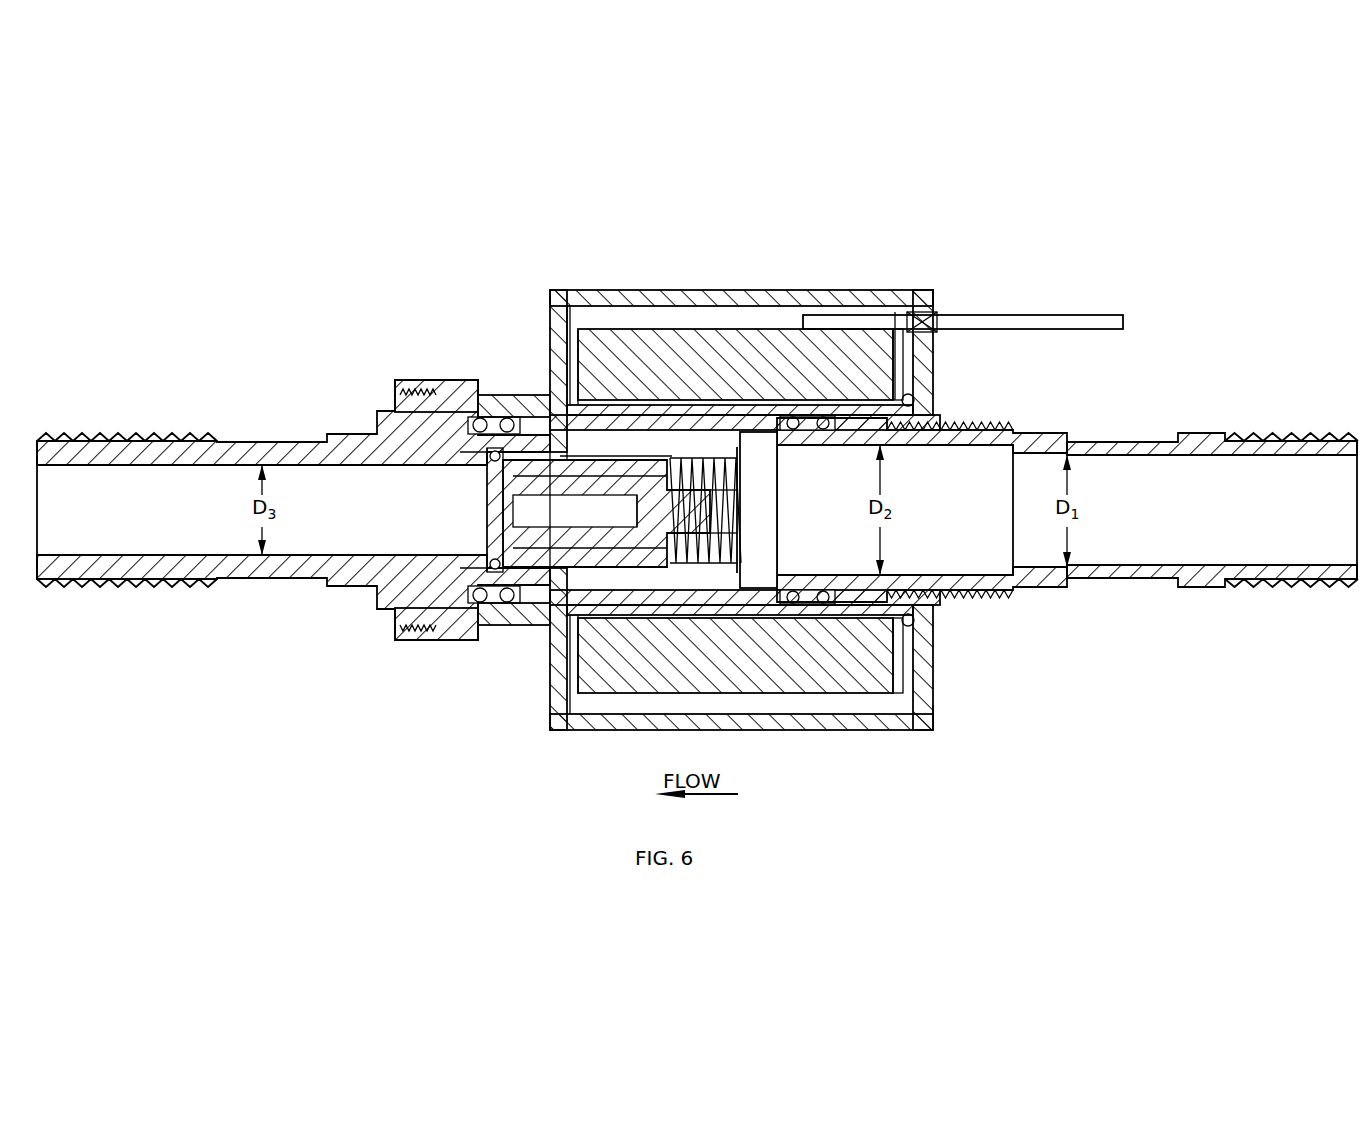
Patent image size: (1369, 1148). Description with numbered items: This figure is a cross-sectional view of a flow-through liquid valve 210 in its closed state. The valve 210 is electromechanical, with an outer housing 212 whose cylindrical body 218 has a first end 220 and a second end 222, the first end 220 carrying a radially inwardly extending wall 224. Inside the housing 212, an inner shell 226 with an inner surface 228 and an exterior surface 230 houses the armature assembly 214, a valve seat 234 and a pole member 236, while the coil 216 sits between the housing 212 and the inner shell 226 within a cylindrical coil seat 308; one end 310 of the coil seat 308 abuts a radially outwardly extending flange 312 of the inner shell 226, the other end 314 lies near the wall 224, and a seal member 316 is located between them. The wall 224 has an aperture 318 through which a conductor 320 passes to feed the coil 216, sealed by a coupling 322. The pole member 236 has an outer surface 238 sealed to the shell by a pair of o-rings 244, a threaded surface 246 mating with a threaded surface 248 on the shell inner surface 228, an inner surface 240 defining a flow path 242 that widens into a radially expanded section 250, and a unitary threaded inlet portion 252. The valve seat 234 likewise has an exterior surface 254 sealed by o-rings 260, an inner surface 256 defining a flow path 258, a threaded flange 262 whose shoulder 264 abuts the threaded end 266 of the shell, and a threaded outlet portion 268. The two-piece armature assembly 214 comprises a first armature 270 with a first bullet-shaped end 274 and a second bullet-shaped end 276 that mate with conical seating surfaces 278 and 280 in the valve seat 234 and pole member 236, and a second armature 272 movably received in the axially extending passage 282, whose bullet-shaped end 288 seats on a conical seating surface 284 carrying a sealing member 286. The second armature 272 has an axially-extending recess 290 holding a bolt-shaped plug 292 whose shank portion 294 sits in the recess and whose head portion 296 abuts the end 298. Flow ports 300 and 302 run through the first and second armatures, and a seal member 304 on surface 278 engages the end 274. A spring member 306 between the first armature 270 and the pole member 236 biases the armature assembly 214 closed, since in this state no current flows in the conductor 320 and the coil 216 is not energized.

The flow-through liquid valve 210 is at (1121, 200).
The housing 212 is at (881, 745).
The armature assembly 214 is at (835, 405).
The coil 216 is at (880, 670).
The cylindrical body 218 is at (715, 729).
The first end 220 is at (925, 300).
The second end 222 is at (575, 293).
The radially inwardly extending wall 224 is at (940, 385).
The inner shell 226 is at (540, 618).
The inner surface 228 is at (660, 617).
The exterior surface 230 is at (965, 607).
The valve seat 234 is at (340, 580).
The pole member 236 is at (1065, 590).
The outer surface 238 is at (1115, 440).
The inner surface 240 is at (1135, 562).
The flow path 242 is at (1298, 522).
The o-rings 244 is at (797, 593).
The threaded surface 246 is at (1020, 425).
The threaded surface 248 is at (965, 415).
The radially expanded section 250 is at (935, 575).
The threaded inlet portion 252 is at (1307, 423).
The exterior surface 254 is at (197, 584).
The inner surface 256 is at (157, 555).
The flow path 258 is at (208, 520).
The o-rings 260 is at (472, 418).
The threaded flange 262 is at (430, 632).
The shoulder 264 is at (400, 622).
The threaded end 266 is at (400, 380).
The threaded outlet portion 268 is at (97, 602).
The first armature 270 is at (496, 505).
The second armature 272 is at (490, 520).
The first bullet-shaped end 274 is at (484, 464).
The second bullet-shaped end 276 is at (705, 452).
The seating surface 278 is at (545, 640).
The seating surface 280 is at (578, 630).
The axially extending passage 282 is at (520, 640).
The conical seating surface 284 is at (545, 396).
The sealing member 286 is at (460, 630).
The bullet-shaped end 288 is at (513, 510).
The axially-extending recess 290 is at (568, 522).
The bolt-shaped plug 292 is at (702, 482).
The shank portion 294 is at (735, 458).
The head portion 296 is at (714, 472).
The end 298 is at (702, 500).
The flow ports 300 is at (622, 450).
The flow ports 302 is at (552, 628).
The seal member 304 is at (465, 450).
The spring member 306 is at (722, 545).
The coil seat 308 is at (795, 617).
The end 310 is at (596, 306).
The radially outwardly extending flange 312 is at (558, 300).
The end 314 is at (934, 718).
The seal member 316 is at (928, 365).
The aperture 318 is at (937, 320).
The conductor 320 is at (1085, 316).
The coupling 322 is at (905, 316).